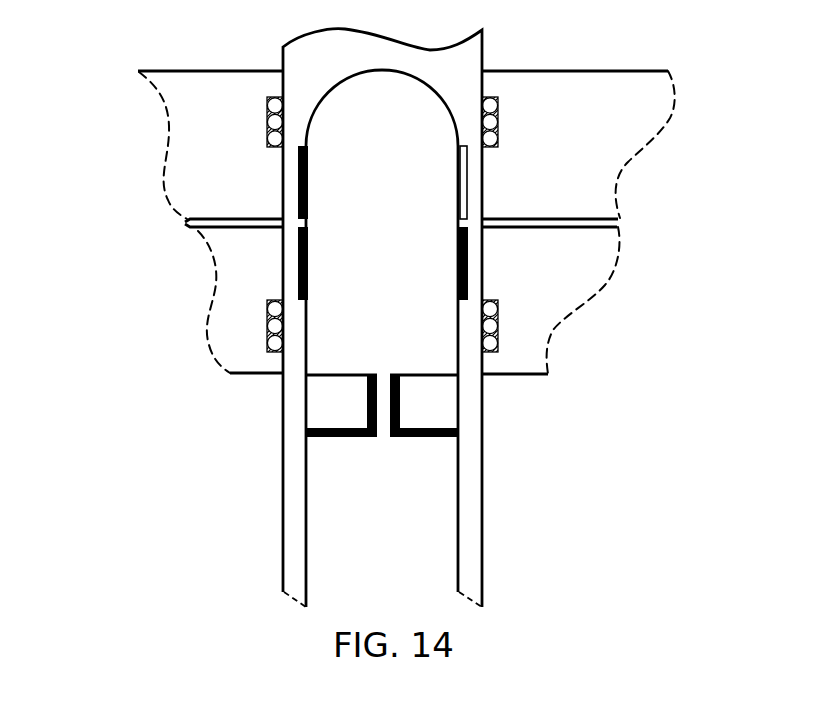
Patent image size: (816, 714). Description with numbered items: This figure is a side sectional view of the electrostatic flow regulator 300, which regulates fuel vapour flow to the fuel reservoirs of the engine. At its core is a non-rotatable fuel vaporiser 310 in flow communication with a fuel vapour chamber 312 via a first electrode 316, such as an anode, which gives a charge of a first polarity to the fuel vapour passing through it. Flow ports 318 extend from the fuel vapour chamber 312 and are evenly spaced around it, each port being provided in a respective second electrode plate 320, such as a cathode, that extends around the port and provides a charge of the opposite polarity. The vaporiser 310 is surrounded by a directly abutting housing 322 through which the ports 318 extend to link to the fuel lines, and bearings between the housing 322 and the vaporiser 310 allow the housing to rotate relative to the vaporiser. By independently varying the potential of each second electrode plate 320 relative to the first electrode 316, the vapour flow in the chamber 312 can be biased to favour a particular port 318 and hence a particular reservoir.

The flow regulator 300 is at (84, 84).
The fuel vaporiser 310 is at (335, 503).
The fuel vapour chamber 312 is at (430, 358).
The first electrode 316 is at (432, 438).
The flow port 318 is at (192, 225).
The second electrode plate 320 is at (300, 192).
The housing 322 is at (181, 131).